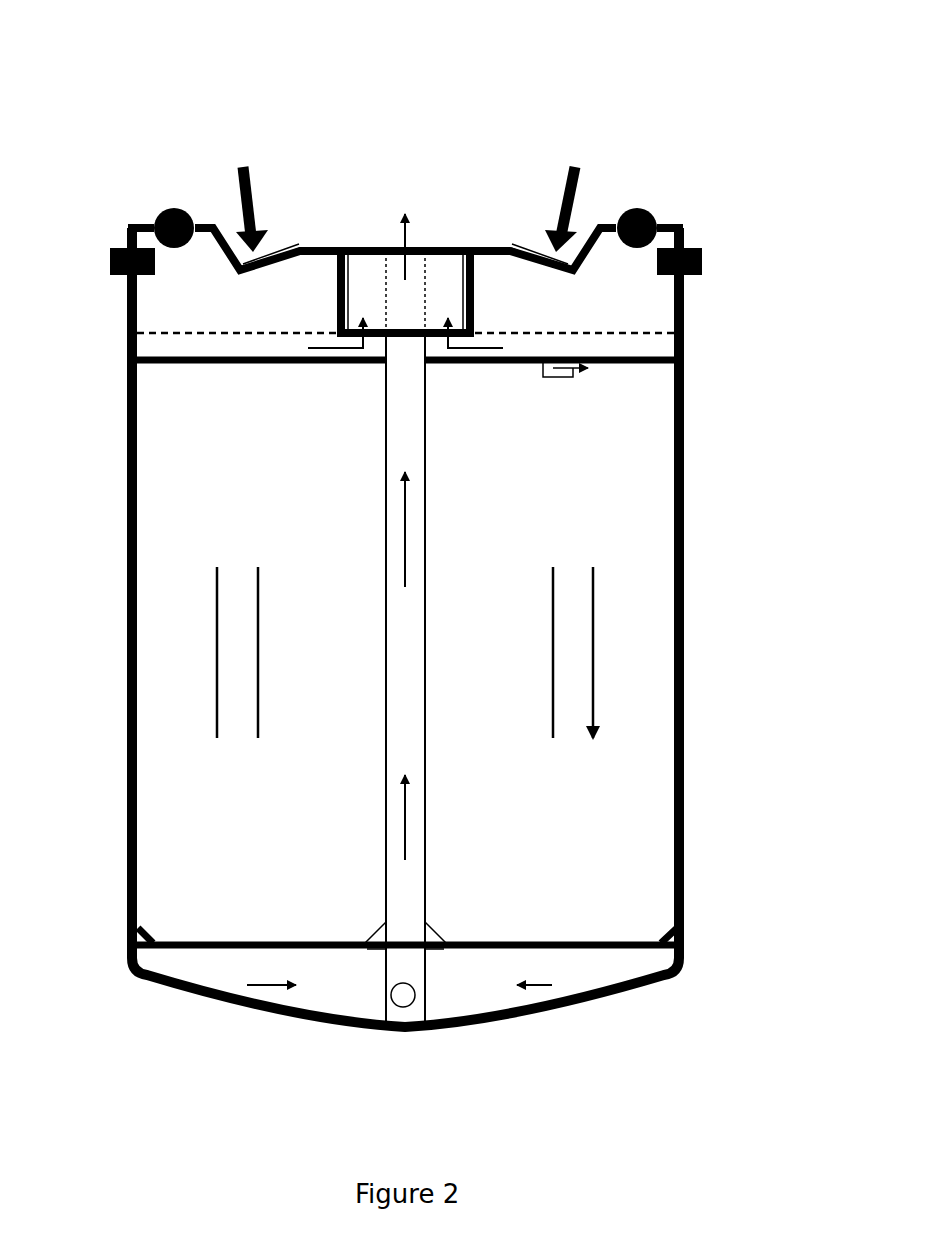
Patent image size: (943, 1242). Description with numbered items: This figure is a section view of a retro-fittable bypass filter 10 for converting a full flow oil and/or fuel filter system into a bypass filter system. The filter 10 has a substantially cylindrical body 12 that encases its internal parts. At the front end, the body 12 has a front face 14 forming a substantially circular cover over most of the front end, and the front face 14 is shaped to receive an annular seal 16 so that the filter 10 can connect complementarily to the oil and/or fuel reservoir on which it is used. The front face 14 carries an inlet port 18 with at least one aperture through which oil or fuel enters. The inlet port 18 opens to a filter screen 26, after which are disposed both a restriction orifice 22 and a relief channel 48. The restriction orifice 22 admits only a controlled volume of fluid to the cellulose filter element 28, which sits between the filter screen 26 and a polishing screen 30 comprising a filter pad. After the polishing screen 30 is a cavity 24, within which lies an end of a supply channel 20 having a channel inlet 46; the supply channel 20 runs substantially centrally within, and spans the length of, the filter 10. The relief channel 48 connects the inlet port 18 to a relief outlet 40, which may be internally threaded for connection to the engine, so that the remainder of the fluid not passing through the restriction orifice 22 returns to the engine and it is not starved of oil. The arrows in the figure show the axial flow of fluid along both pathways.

The retro-fittable bypass filter 10 is at (118, 72).
The body 12 is at (683, 617).
The front face 14 is at (143, 223).
The annular seal 16 is at (645, 222).
The inlet port 18 is at (520, 245).
The supply channel 20 is at (413, 708).
The restriction orifice 22 is at (590, 372).
The cavity 24 is at (603, 963).
The filter screen 26 is at (180, 333).
The cellulose filter element 28 is at (396, 590).
The polishing screen 30 is at (180, 940).
The relief outlet 40 is at (365, 255).
The channel inlet 46 is at (405, 997).
The relief channel 48 is at (363, 292).